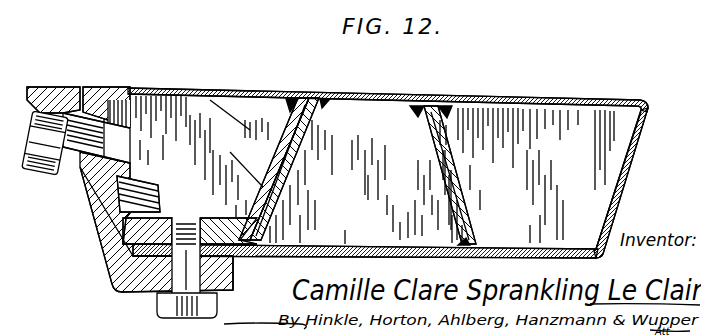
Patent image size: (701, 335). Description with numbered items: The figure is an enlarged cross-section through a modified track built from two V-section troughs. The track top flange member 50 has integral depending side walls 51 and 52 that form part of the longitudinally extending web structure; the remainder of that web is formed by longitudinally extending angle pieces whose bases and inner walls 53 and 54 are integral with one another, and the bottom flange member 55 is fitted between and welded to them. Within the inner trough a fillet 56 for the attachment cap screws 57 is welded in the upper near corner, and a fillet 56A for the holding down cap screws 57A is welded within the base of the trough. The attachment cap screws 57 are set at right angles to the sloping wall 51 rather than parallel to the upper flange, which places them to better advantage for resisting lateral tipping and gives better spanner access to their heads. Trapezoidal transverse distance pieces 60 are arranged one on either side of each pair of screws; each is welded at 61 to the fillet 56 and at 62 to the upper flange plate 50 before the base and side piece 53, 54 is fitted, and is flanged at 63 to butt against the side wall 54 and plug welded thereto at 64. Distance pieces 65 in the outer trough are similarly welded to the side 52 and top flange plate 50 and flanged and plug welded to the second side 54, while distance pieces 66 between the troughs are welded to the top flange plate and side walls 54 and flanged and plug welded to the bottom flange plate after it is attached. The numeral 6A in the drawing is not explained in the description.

The track top flange member 50 is at (498, 101).
The depending side wall 51 is at (152, 190).
The depending side wall 52 is at (608, 207).
The base 53 is at (233, 258).
The inner wall 54 is at (296, 140).
The bottom flange member 55 is at (372, 256).
The fillet 56 is at (131, 140).
The fillet 56A is at (223, 220).
The attachment cap screw 57 is at (66, 172).
The holding down cap screw 57A is at (183, 277).
The transverse distance piece 60 is at (250, 128).
The weld 61 is at (123, 107).
The weld 62 is at (210, 100).
The flange 63 is at (234, 165).
The plug weld 64 is at (277, 191).
The distance piece 65 is at (572, 143).
The distance piece 66 is at (382, 127).
The partition plate 6A is at (301, 126).